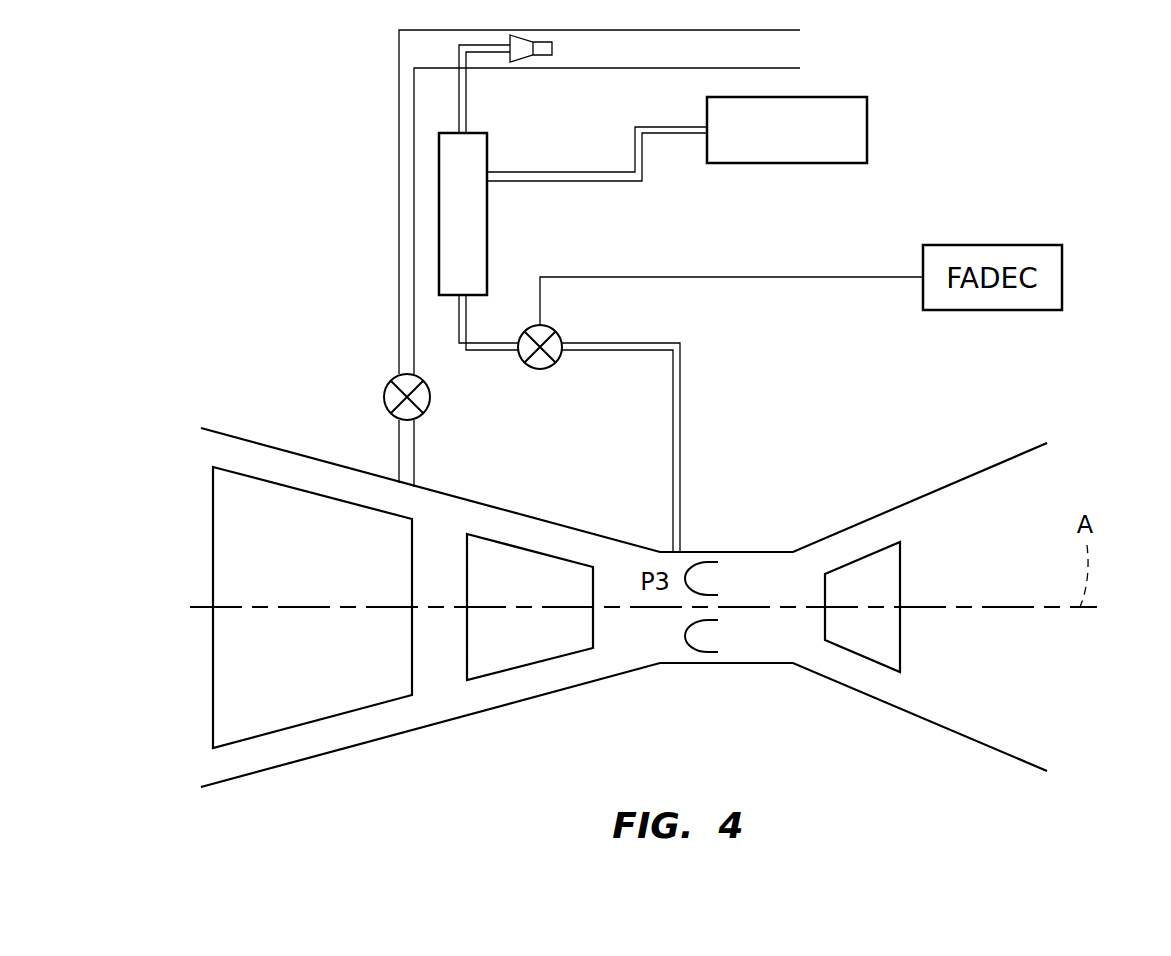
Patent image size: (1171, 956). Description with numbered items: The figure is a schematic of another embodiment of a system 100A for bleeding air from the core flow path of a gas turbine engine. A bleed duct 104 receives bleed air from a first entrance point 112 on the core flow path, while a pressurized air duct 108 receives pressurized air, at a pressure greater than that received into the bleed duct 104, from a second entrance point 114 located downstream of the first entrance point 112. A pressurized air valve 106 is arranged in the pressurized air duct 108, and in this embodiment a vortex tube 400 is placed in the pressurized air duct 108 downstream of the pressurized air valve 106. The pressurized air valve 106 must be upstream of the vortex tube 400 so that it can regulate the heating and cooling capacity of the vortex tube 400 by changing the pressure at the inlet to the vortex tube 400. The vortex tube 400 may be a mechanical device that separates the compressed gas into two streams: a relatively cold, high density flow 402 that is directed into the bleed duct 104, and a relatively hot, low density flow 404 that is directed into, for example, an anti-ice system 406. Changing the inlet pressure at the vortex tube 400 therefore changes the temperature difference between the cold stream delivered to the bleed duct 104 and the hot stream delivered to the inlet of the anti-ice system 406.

The system 100A is at (686, 418).
The bleed duct 104 is at (390, 196).
The pressurized air valve 106 is at (560, 330).
The pressurized air duct 108 is at (706, 375).
The first entrance point 112 is at (399, 481).
The second entrance point 114 is at (683, 551).
The vortex tube 400 is at (487, 243).
The relatively cold, high density flow 402 is at (459, 95).
The relatively hot, low density flow 404 is at (540, 172).
The anti-ice system 406 is at (867, 119).